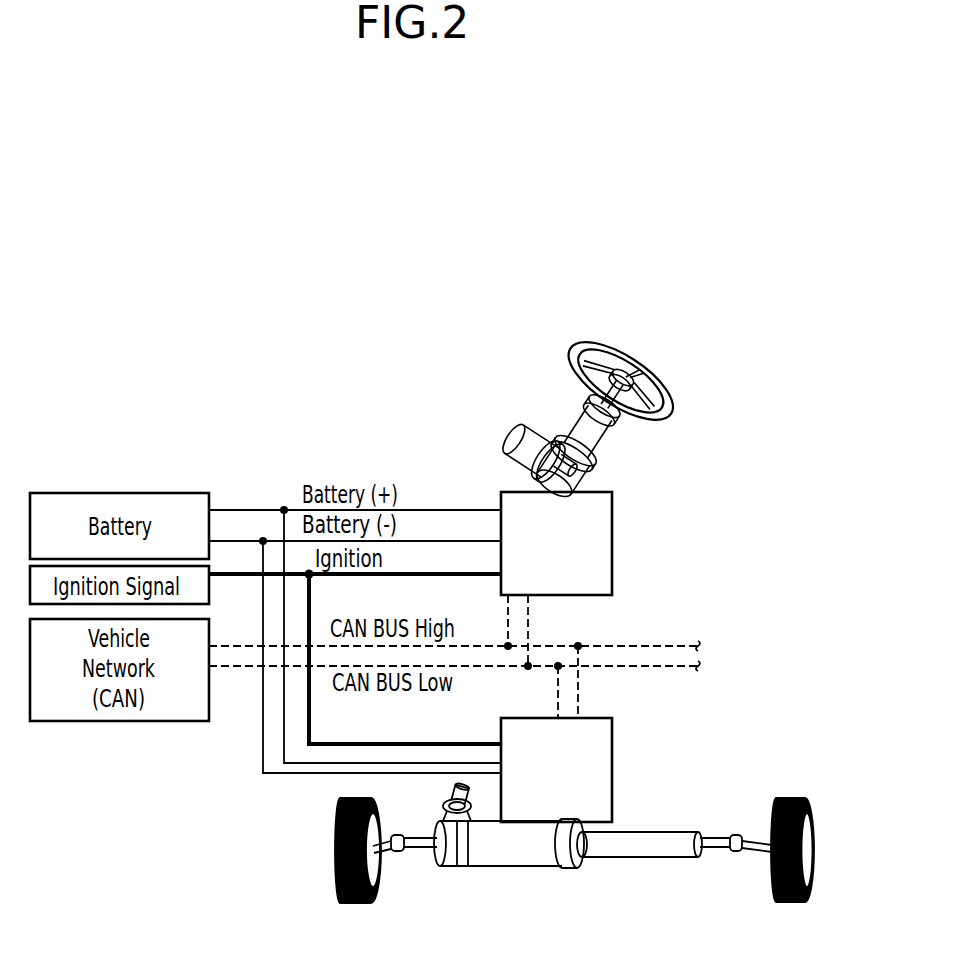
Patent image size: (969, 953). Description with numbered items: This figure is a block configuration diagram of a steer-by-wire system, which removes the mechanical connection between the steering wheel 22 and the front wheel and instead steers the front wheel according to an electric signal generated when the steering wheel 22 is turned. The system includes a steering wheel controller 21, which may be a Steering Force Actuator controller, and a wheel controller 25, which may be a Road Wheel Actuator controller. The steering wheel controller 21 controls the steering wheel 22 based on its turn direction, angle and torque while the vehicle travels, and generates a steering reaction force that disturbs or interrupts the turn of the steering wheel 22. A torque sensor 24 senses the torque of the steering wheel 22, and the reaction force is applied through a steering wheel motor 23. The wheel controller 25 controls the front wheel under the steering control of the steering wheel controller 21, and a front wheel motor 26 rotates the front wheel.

The steering wheel controller 21 is at (605, 493).
The steering wheel 22 is at (640, 353).
The steering wheel motor 23 is at (512, 426).
The torque sensor 24 is at (560, 461).
The wheel controller 25 is at (605, 718).
The front wheel motor 26 is at (512, 868).